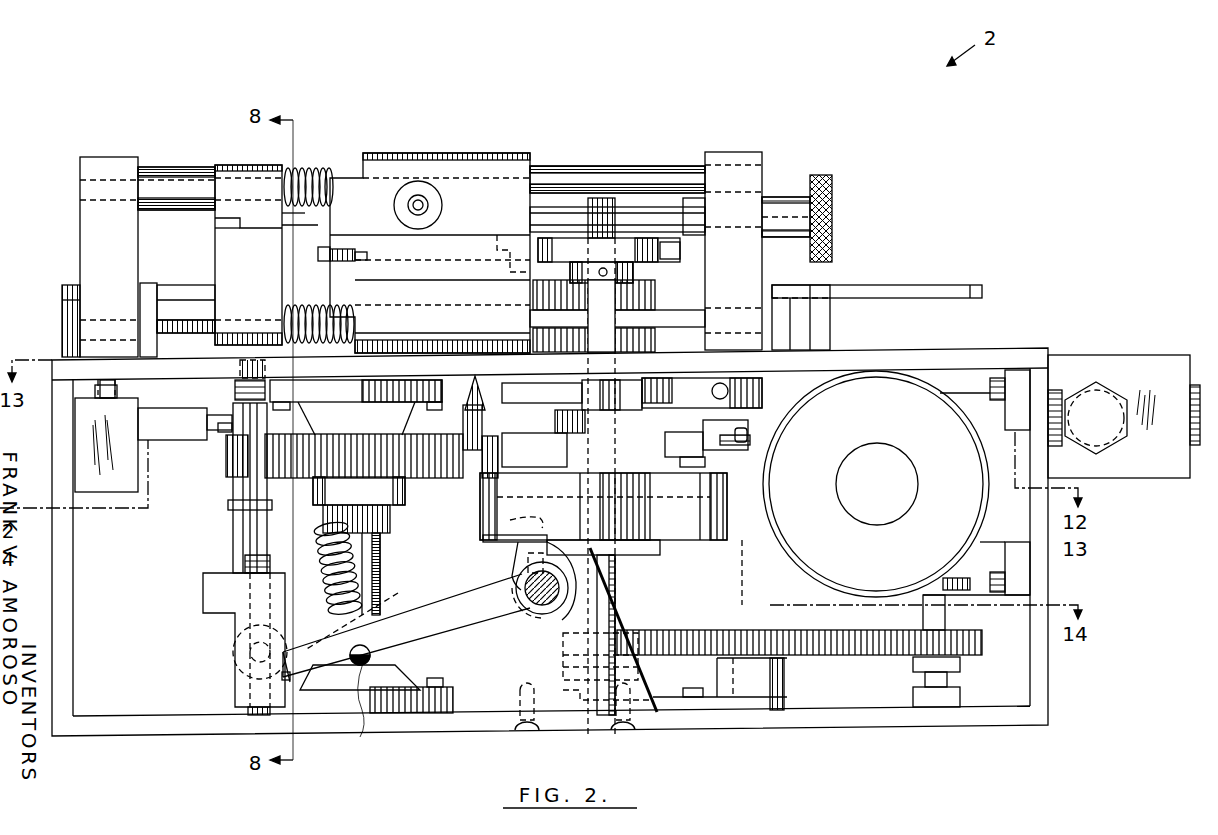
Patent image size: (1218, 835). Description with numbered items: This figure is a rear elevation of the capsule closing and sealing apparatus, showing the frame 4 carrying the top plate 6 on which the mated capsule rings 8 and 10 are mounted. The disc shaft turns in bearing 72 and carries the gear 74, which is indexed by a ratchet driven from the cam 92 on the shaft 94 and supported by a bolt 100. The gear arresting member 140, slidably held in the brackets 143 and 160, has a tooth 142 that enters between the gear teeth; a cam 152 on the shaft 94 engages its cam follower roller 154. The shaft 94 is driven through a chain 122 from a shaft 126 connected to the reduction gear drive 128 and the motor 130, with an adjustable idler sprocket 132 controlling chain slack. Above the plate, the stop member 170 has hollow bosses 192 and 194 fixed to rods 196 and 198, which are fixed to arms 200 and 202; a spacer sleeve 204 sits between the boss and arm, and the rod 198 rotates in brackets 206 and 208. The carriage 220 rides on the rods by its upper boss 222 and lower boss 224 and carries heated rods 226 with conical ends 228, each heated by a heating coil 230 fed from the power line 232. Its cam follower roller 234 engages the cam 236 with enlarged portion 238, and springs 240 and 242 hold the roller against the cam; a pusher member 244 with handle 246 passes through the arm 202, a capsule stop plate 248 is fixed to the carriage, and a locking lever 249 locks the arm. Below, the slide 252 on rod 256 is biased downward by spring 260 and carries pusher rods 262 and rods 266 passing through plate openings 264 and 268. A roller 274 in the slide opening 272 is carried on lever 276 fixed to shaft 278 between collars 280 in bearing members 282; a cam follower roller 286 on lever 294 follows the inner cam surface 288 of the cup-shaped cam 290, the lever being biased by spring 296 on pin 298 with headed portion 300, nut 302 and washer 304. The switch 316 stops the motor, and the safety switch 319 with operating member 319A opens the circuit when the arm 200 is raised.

The frame 4 is at (60, 592).
The top plate 6 is at (945, 357).
The capsule ring 8 is at (60, 332).
The capsule ring 10 is at (62, 300).
The bearing 72 is at (435, 670).
The gear 74 is at (438, 477).
The cam 92 is at (577, 506).
The shaft 94 is at (587, 197).
The bolt 100 is at (705, 461).
The chain 122 is at (685, 633).
The shaft 126 is at (945, 613).
The reduction gear drive 128 is at (965, 424).
The motor 130 is at (892, 499).
The adjustable idler sprocket 132 is at (780, 670).
The gear arresting member 140 is at (538, 390).
The tooth 142 is at (463, 422).
The bracket 143 is at (492, 388).
The cam 152 is at (570, 433).
The cam follower roller 154 is at (705, 438).
The bracket 160 is at (710, 390).
The stop member 170 is at (224, 240).
The hollow boss 192 is at (238, 172).
The hollow boss 194 is at (214, 360).
The rod 196 is at (595, 176).
The rod 198 is at (675, 315).
The arm 200 is at (110, 167).
The arm 202 is at (740, 161).
The spacer sleeve 204 is at (176, 167).
The bracket 206 is at (148, 287).
The bracket 208 is at (695, 297).
The carriage 220 is at (428, 262).
The hollow boss 222 is at (505, 158).
The boss 224 is at (373, 324).
The rods 226 is at (318, 251).
The conical ends 228 is at (318, 258).
The heating coil 230 is at (362, 262).
The power line 232 is at (428, 207).
The cam follower roller 234 is at (501, 270).
The cam 236 is at (630, 210).
The enlarged portion 238 is at (674, 254).
The compression coil spring 240 is at (342, 181).
The compression coil spring 242 is at (325, 312).
The pusher member 244 is at (625, 250).
The handle 246 is at (832, 200).
The capsule stop plate 248 is at (305, 170).
The locking lever 249 is at (923, 288).
The slide 252 is at (206, 598).
The rod 256 is at (250, 712).
The compression coil spring 260 is at (250, 561).
The pusher rods 262 is at (240, 495).
The openings 264 is at (300, 402).
The rods 266 is at (241, 480).
The openings 268 is at (243, 374).
The central opening 272 is at (280, 675).
The roller 274 is at (248, 650).
The lever 276 is at (437, 640).
The shaft 278 is at (545, 608).
The collars 280 is at (512, 568).
The bearing member 282 is at (525, 682).
The cam follower roller 286 is at (603, 506).
The inner cam surface 288 is at (702, 530).
The cup-shaped cam 290 is at (737, 548).
The lever 294 is at (435, 602).
The compression coil spring 296 is at (362, 560).
The pin 298 is at (393, 602).
The headed portion 300 is at (363, 732).
The nut 302 is at (400, 498).
The washer 304 is at (320, 526).
The switch 316 is at (167, 432).
The safety switch 319 is at (78, 434).
The operating member 319A is at (105, 385).